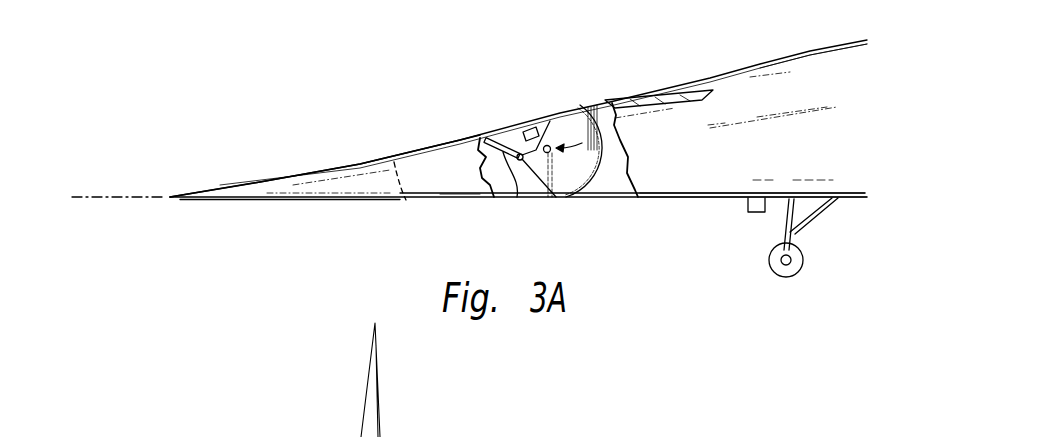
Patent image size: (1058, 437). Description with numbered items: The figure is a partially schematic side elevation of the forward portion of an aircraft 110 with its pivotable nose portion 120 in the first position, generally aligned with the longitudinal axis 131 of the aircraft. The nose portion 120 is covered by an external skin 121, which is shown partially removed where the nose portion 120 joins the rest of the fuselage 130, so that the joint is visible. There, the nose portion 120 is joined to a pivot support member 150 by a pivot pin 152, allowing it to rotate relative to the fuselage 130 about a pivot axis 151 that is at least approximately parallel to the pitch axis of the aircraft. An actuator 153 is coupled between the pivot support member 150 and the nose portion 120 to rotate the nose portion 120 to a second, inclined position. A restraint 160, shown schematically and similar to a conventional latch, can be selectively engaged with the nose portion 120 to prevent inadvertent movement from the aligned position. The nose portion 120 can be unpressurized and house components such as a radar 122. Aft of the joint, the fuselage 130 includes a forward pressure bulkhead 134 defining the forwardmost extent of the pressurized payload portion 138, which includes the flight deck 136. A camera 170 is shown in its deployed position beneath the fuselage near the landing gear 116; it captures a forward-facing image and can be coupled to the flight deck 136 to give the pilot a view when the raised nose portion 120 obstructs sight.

The aircraft 110 is at (861, 231).
The landing gear 116 is at (802, 222).
The nose portion 120 is at (258, 183).
The external skin 121 is at (470, 180).
The radar 122 is at (406, 200).
The fuselage 130 is at (708, 163).
The longitudinal axis 131 is at (91, 197).
The forward pressure bulkhead 134 is at (593, 180).
The flight deck 136 is at (697, 86).
The pressurized payload portion 138 is at (798, 85).
The pivot support member 150 is at (578, 108).
The pivot axis 151 is at (612, 103).
The pivot pin 152 is at (560, 180).
The actuator 153 is at (513, 180).
The restraint 160 is at (556, 120).
The camera 170 is at (753, 213).